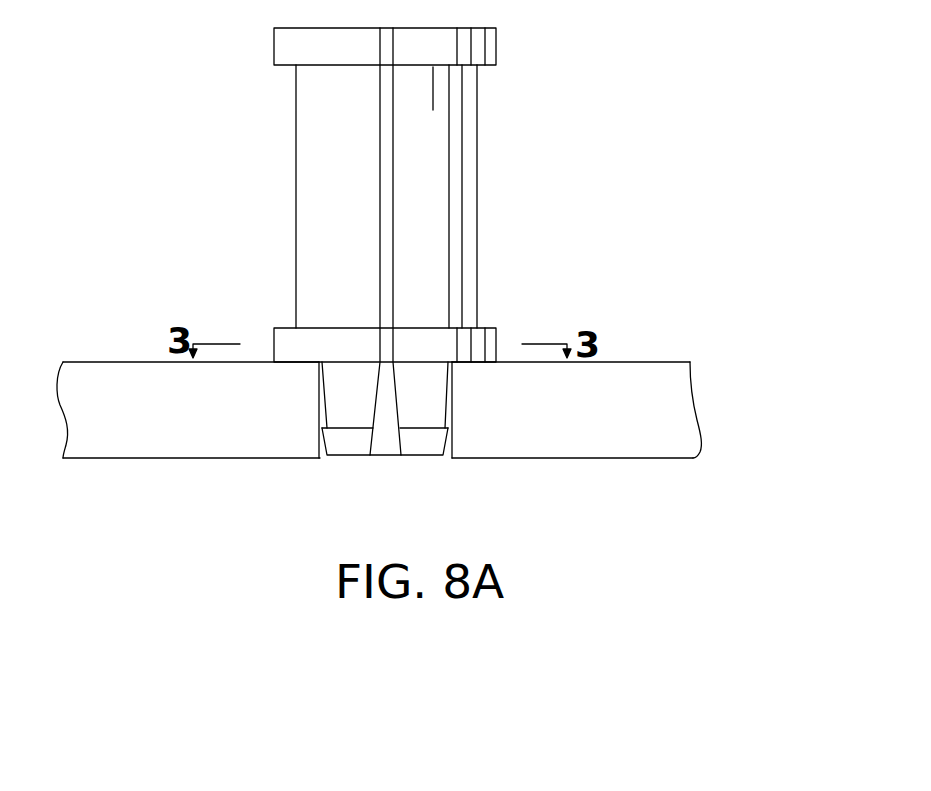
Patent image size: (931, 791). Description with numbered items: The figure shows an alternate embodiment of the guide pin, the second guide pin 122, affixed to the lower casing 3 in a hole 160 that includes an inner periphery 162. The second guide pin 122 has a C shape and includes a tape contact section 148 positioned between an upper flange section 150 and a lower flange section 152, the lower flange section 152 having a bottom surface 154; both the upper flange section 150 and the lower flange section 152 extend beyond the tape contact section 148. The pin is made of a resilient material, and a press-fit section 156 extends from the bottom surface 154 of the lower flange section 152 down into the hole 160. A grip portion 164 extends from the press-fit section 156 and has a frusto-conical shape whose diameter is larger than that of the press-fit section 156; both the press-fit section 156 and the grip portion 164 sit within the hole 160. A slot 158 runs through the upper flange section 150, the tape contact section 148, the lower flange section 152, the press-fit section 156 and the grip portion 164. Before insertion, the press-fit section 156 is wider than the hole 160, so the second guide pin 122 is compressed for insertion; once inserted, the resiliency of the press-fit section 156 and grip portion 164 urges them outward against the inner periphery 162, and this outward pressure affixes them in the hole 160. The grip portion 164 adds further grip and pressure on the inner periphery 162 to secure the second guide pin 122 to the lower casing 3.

The lower casing 3 is at (677, 384).
The second guide pin 122 is at (490, 230).
The tape contact section 148 is at (448, 207).
The upper flange section 150 is at (451, 52).
The lower flange section 152 is at (481, 345).
The bottom surface 154 is at (267, 355).
The press-fit section 156 is at (419, 418).
The slot 158 is at (388, 122).
The hole 160 is at (375, 466).
The inner periphery 162 is at (320, 410).
The grip portion 164 is at (338, 444).